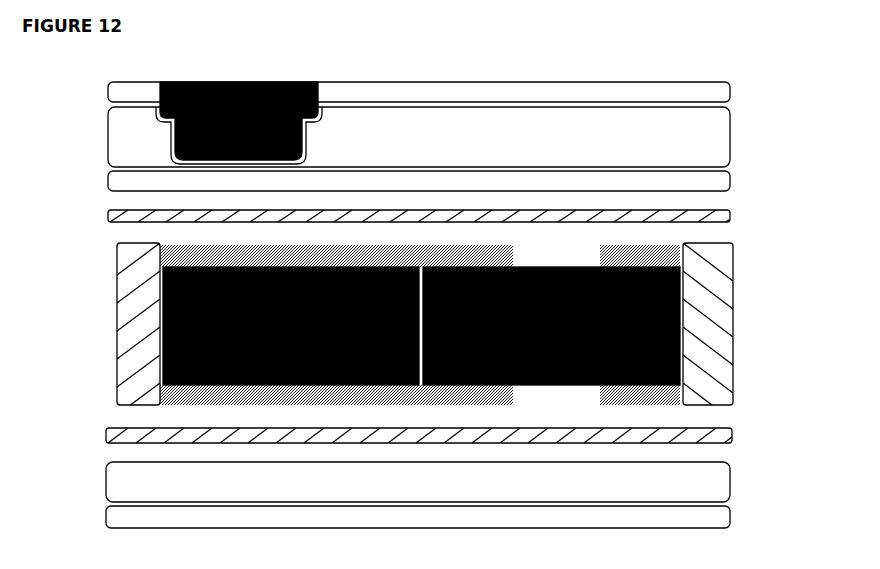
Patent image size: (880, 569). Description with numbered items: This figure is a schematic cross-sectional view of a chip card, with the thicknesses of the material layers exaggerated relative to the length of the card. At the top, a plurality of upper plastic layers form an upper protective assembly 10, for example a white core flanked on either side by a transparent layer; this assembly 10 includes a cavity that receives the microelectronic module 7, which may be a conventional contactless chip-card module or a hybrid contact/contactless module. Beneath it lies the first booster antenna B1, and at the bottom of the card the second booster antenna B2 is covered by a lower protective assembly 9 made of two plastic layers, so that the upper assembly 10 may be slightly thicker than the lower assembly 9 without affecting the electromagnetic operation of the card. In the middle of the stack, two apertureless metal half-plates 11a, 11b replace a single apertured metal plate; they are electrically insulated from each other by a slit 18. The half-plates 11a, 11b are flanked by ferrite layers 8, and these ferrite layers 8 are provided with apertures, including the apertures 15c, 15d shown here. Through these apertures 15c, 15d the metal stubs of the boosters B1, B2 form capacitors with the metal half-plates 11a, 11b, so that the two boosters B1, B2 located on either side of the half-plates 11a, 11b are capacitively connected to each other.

The microelectronic module 7 is at (245, 83).
The upper protective assembly 10 is at (735, 75).
The aperture in ferrite layer 15d is at (577, 263).
The first booster antenna B1 is at (720, 219).
The ferrite layer 8 is at (690, 246).
The slit 18 is at (423, 266).
The metal half-plate 11a is at (165, 288).
The metal half-plate 11b is at (680, 325).
The second booster antenna B2 is at (722, 434).
The aperture in ferrite layer 15c is at (573, 396).
The lower protective assembly 9 is at (740, 455).